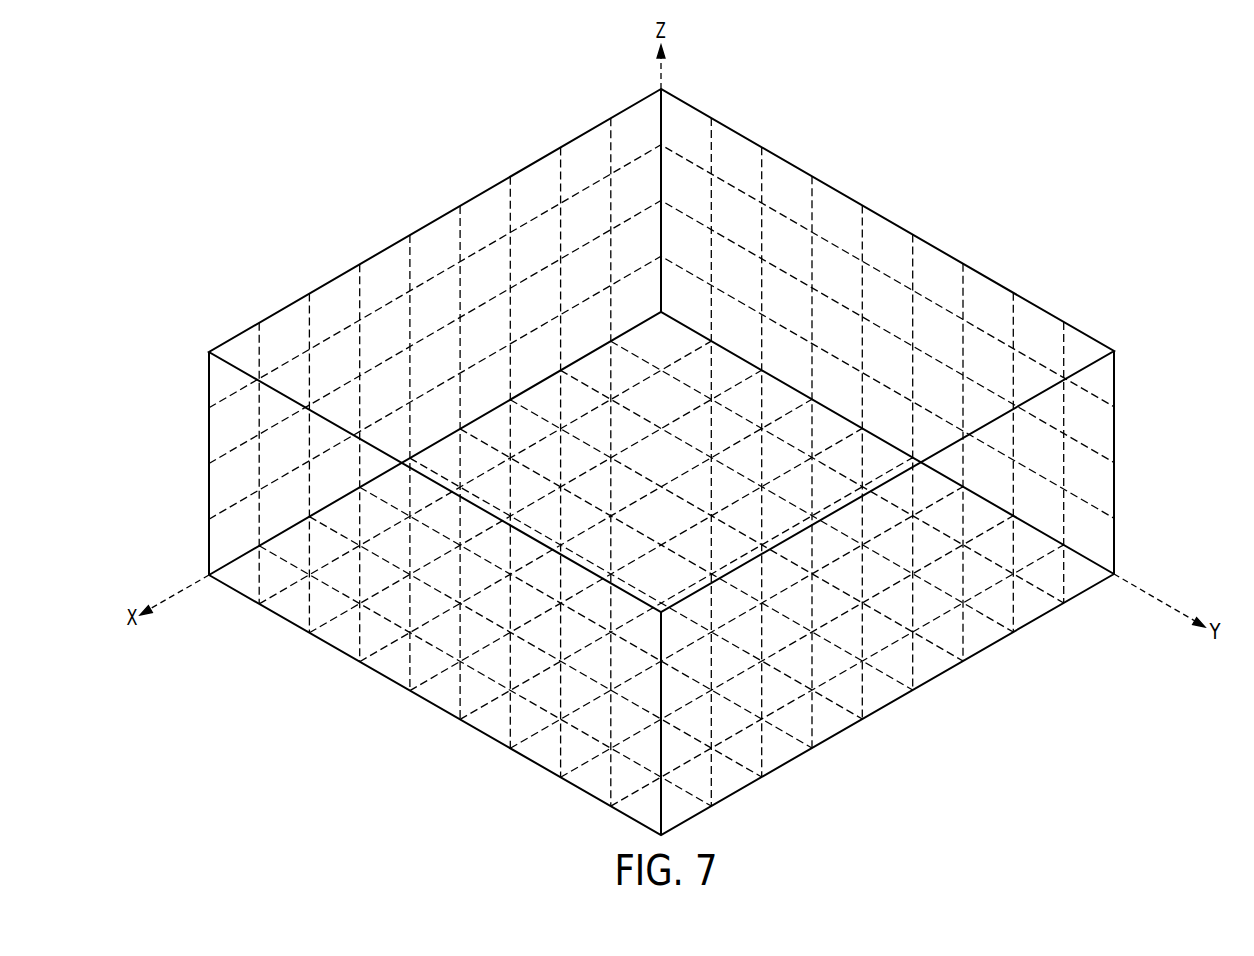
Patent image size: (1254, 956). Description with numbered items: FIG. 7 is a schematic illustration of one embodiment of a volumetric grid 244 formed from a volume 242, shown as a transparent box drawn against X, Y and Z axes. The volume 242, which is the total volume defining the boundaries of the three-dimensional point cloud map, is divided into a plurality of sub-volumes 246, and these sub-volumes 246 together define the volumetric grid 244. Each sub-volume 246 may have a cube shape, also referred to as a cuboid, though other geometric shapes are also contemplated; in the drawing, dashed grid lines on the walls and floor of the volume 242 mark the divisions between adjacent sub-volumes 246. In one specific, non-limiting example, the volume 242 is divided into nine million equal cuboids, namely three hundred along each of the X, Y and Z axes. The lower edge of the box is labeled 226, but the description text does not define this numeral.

The base surface 226 is at (810, 749).
The volume 242 is at (1114, 425).
The volumetric grid 244 is at (1000, 116).
The sub-volumes 246 is at (335, 279).